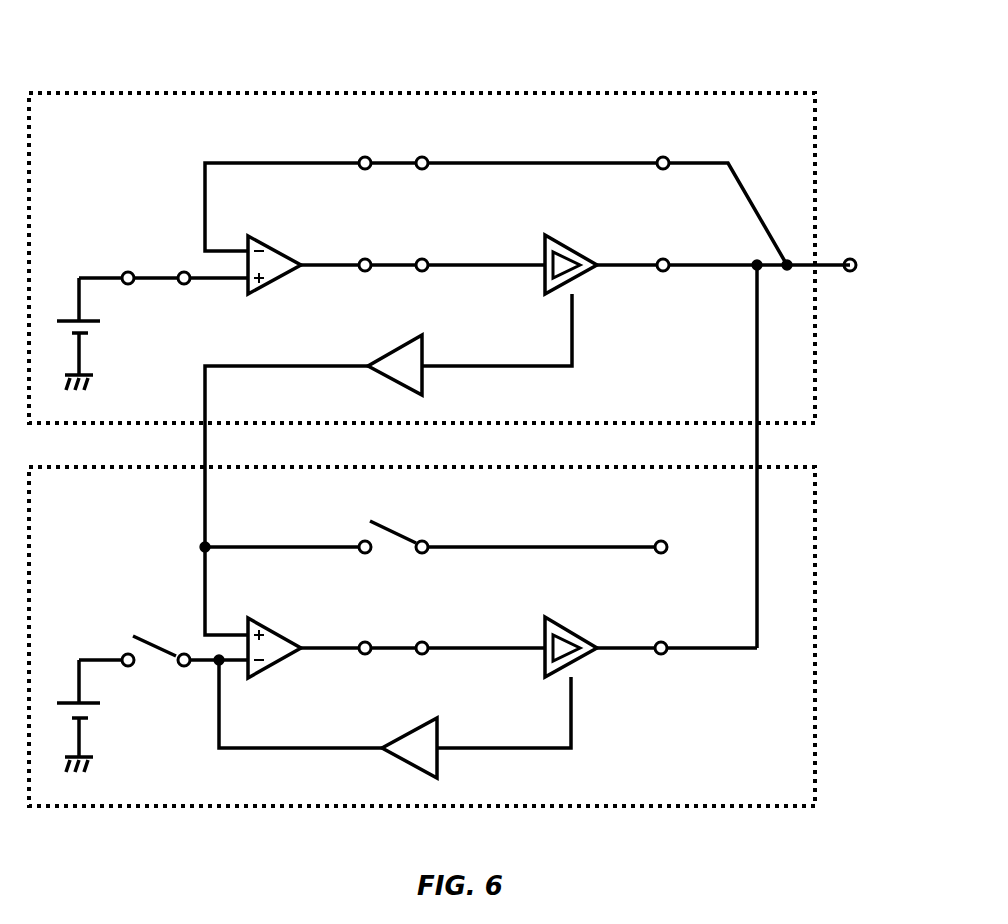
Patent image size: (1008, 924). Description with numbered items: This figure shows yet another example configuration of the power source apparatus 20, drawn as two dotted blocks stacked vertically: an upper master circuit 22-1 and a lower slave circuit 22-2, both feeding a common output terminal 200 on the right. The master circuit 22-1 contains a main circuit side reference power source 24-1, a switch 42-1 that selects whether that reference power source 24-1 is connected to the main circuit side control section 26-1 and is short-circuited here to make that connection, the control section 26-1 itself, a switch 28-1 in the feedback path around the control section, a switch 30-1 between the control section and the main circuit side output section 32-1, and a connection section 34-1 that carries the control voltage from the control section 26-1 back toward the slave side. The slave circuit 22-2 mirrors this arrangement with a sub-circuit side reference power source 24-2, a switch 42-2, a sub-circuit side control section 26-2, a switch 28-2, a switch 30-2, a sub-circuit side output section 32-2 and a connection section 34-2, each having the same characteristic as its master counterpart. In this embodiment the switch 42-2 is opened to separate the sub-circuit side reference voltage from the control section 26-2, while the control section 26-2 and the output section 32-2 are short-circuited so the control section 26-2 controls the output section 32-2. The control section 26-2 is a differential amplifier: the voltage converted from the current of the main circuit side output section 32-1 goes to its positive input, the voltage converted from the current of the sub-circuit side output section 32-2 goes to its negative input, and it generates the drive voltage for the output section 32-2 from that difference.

The power source apparatus 20 is at (811, 35).
The master circuit 22-1 is at (815, 364).
The slave circuit 22-2 is at (815, 748).
The main circuit side reference power source 24-1 is at (98, 314).
The sub-circuit side reference power source 24-2 is at (98, 697).
The main circuit side control section 26-1 is at (298, 229).
The sub-circuit side control section 26-2 is at (298, 610).
The switch 28-1 is at (445, 135).
The switch 28-2 is at (362, 540).
The switch 30-1 is at (445, 236).
The switch 30-2 is at (445, 618).
The main circuit side output section 32-1 is at (597, 228).
The sub-circuit side output section 32-2 is at (597, 612).
The connection section 34-1 is at (398, 348).
The connection section 34-2 is at (412, 731).
The switch 42-1 is at (125, 270).
The switch 42-2 is at (125, 652).
The output terminal 200 is at (878, 266).